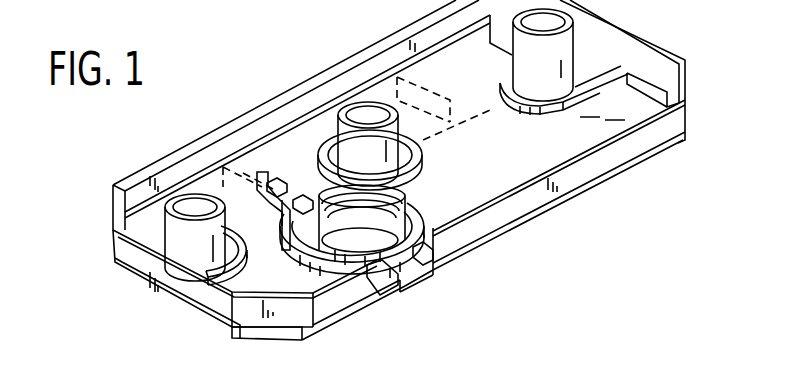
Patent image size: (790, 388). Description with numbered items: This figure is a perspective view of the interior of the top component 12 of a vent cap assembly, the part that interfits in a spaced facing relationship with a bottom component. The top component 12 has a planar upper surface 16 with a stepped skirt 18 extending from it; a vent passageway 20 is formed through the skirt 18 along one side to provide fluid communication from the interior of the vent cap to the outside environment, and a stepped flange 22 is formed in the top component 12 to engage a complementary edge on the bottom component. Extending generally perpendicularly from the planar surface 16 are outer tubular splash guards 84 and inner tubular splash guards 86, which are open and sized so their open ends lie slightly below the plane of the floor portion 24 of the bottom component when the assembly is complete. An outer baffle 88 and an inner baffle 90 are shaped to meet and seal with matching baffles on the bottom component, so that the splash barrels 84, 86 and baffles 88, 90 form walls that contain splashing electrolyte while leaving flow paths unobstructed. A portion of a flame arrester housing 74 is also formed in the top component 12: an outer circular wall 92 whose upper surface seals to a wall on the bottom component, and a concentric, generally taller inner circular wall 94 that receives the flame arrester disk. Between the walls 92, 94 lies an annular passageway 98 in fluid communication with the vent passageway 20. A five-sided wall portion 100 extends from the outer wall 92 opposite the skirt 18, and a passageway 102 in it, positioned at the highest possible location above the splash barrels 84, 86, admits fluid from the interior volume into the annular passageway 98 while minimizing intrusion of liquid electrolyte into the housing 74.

The top component 12 is at (297, 52).
The planar upper surface 16 is at (507, 173).
The stepped skirt 18 is at (528, 200).
The vent passageway 20 is at (422, 283).
The stepped flange 22 is at (452, 42).
The floor portion 24 is at (705, 381).
The flame arrester housing 74 is at (432, 212).
The outer tubular splash guards 84 is at (172, 240).
The inner tubular splash guards 86 is at (400, 140).
The outer baffle 88 is at (228, 240).
The inner baffle 90 is at (405, 180).
The outer circular wall 92 is at (330, 273).
The inner circular wall 94 is at (345, 263).
The annular passageway 98 is at (437, 262).
The five-sided wall portion 100 is at (264, 200).
The passageway 102 is at (293, 200).